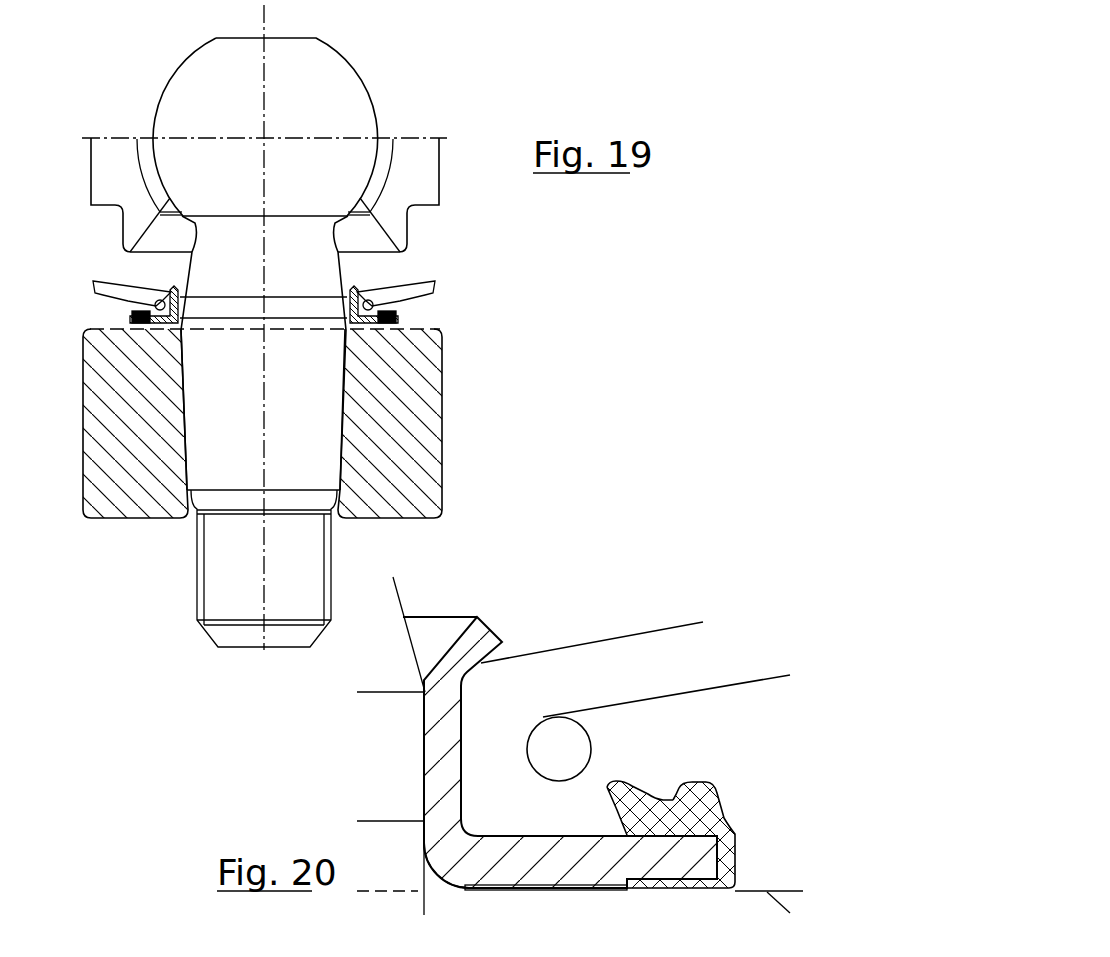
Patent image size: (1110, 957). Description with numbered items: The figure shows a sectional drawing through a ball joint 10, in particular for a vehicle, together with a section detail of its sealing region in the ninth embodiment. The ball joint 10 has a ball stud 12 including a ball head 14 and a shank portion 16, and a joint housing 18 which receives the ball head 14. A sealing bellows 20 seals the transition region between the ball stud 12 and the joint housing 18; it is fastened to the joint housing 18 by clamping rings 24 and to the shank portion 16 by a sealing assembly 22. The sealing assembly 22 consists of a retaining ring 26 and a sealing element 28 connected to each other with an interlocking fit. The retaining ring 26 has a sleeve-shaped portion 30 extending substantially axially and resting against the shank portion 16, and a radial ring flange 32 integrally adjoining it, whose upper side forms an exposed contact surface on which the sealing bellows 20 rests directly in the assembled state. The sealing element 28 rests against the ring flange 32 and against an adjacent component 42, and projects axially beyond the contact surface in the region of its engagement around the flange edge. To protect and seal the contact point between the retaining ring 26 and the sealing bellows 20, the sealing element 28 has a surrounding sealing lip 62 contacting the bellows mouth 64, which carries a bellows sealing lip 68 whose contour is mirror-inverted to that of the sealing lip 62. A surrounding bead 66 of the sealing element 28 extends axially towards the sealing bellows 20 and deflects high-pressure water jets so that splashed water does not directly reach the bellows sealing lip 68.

In FIG. 19, the ball joint 10 is at (566, 273).
In FIG. 19, the ball stud 12 is at (191, 560).
In FIG. 19, the ball head 14 is at (188, 78).
In FIG. 19, the shank portion 16 is at (323, 373).
In FIG. 20, the shank portion 16 is at (403, 811).
In FIG. 19, the joint housing 18 is at (107, 178).
In FIG. 19, the sealing bellows 20 is at (103, 292).
In FIG. 20, the sealing bellows 20 is at (629, 656).
In FIG. 19, the sealing assembly 22 is at (465, 292).
In FIG. 19, the clamping ring 24 is at (156, 306).
In FIG. 20, the clamping ring 24 is at (575, 743).
In FIG. 19, the retaining ring 26 is at (397, 320).
In FIG. 20, the retaining ring 26 is at (441, 843).
In FIG. 19, the sealing element 28 is at (397, 300).
In FIG. 20, the sealing element 28 is at (708, 820).
In FIG. 20, the sleeve-shaped portion 30 is at (440, 745).
In FIG. 20, the radial ring flange 32 is at (673, 868).
In FIG. 19, the adjacent component 42 is at (427, 447).
In FIG. 20, the adjacent component 42 is at (513, 890).
In FIG. 20, the sealing lip 62 is at (630, 790).
In FIG. 19, the bellows mouth 64 is at (358, 296).
In FIG. 20, the bellows mouth 64 is at (510, 707).
In FIG. 20, the bead 66 is at (708, 790).
In FIG. 20, the bellows sealing lip 68 is at (602, 818).